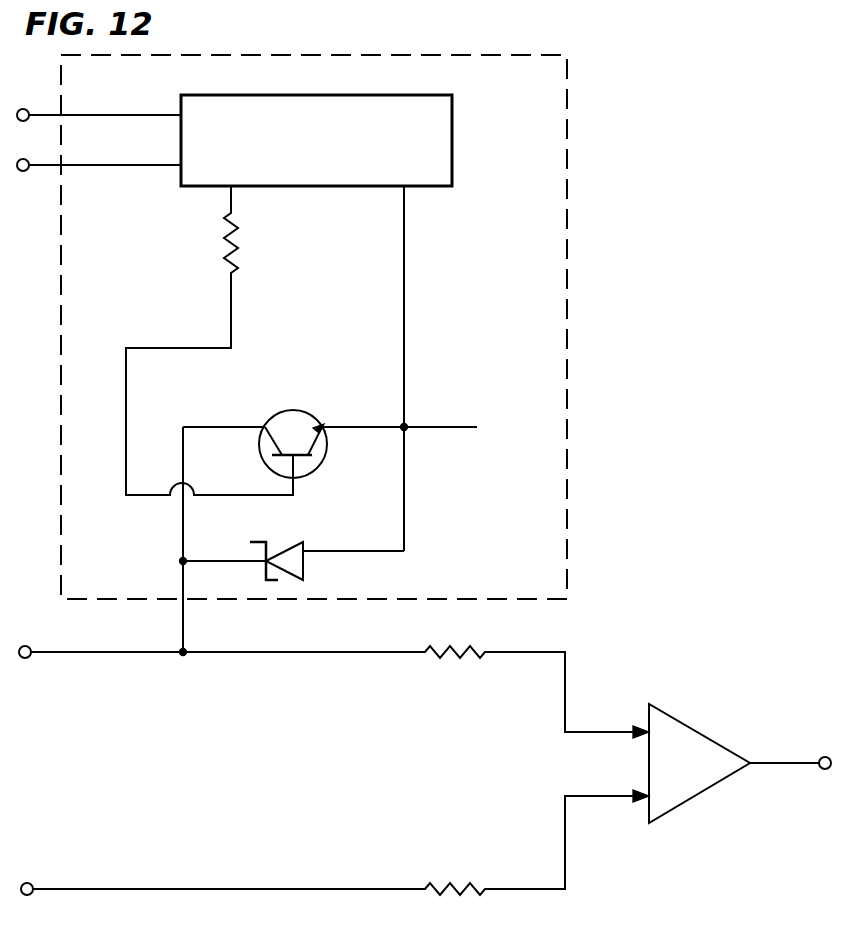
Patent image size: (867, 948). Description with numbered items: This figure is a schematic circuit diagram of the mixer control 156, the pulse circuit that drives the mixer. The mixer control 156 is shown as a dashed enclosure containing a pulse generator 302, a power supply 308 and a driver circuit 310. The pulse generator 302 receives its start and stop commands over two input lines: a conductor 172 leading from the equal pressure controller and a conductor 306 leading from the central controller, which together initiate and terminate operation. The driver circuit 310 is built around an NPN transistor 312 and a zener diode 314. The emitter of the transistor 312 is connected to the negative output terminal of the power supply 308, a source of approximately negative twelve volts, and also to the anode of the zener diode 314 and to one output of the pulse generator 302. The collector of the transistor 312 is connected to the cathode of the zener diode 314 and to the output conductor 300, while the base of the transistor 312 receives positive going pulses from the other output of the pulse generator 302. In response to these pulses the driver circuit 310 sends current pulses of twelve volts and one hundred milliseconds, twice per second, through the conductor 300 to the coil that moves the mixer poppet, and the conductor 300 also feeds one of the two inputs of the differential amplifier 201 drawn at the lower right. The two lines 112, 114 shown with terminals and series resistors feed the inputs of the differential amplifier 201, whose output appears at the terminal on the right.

The mixer control 156 is at (527, 308).
The conductor 172 is at (139, 113).
The conductor 306 is at (146, 166).
The pulse generator 302 is at (448, 134).
The driver circuit 310 is at (197, 342).
The transistor 312 is at (298, 412).
The power supply 308 is at (448, 426).
The zener diode 314 is at (295, 548).
The conductor 300 is at (184, 627).
The first signal lead 112 is at (121, 650).
The second signal lead 114 is at (117, 893).
The differential amplifier 201 is at (697, 748).